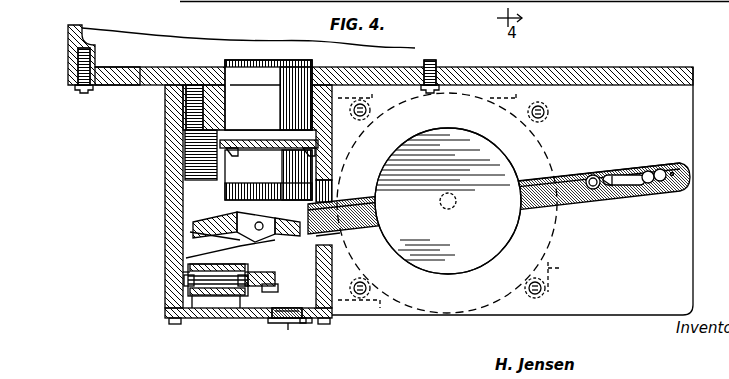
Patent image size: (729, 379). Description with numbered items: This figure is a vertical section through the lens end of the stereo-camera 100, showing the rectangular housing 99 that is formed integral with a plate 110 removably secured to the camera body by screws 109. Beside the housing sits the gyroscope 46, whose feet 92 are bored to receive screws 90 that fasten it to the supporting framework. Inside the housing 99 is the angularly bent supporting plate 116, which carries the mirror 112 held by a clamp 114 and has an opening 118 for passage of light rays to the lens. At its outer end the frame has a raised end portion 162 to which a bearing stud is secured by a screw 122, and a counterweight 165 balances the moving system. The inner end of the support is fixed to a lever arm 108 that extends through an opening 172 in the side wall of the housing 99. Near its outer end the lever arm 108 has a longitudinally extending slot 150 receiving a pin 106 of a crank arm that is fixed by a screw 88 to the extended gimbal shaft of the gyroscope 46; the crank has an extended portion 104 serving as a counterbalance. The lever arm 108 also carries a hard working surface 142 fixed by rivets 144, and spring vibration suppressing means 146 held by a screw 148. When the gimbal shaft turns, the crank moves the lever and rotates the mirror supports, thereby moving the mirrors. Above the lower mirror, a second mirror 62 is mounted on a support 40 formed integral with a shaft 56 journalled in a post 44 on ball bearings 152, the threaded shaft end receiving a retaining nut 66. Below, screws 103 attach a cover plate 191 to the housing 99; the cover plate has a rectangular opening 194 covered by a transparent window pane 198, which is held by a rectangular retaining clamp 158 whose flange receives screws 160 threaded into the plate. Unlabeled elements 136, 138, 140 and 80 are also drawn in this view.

The stereo-camera 100 is at (68, 30).
The screws 109 is at (79, 93).
The plate 110 is at (140, 80).
The cylinder 80 is at (268, 92).
The screws 90 is at (359, 103).
The feet 92 is at (374, 92).
The gyroscope 46 is at (552, 135).
The plate 136 is at (220, 143).
The retainer 138 is at (226, 150).
The spring 140 is at (225, 160).
The opening 172 is at (334, 185).
The slot 150 is at (642, 172).
The rivets 144 is at (612, 180).
The hard working surface 142 is at (620, 172).
The pin 106 is at (658, 169).
The spring vibration suppressing means 146 is at (613, 187).
The screw 148 is at (593, 190).
The supporting plate 116 is at (230, 220).
The opening 118 is at (266, 200).
The counterweight 165 is at (190, 233).
The raised end portion 162 is at (186, 258).
The extended portion 104 is at (342, 220).
The clamp 114 is at (336, 236).
The screw 88 is at (452, 210).
The lever arm 108 is at (485, 208).
The shaft 56 is at (212, 271).
The screw 122 is at (256, 238).
The mirror 112 is at (286, 238).
The mirror 62 is at (276, 278).
The housing 99 is at (186, 278).
The retaining nut 66 is at (186, 285).
The support 40 is at (268, 290).
The cover plate 191 is at (168, 312).
The screws 103 is at (173, 325).
The ball bearings 152 is at (192, 320).
The post 44 is at (216, 296).
The retaining clamp 158 is at (270, 320).
The screws 160 is at (266, 324).
The window pane 198 is at (287, 330).
The opening 194 is at (306, 324).